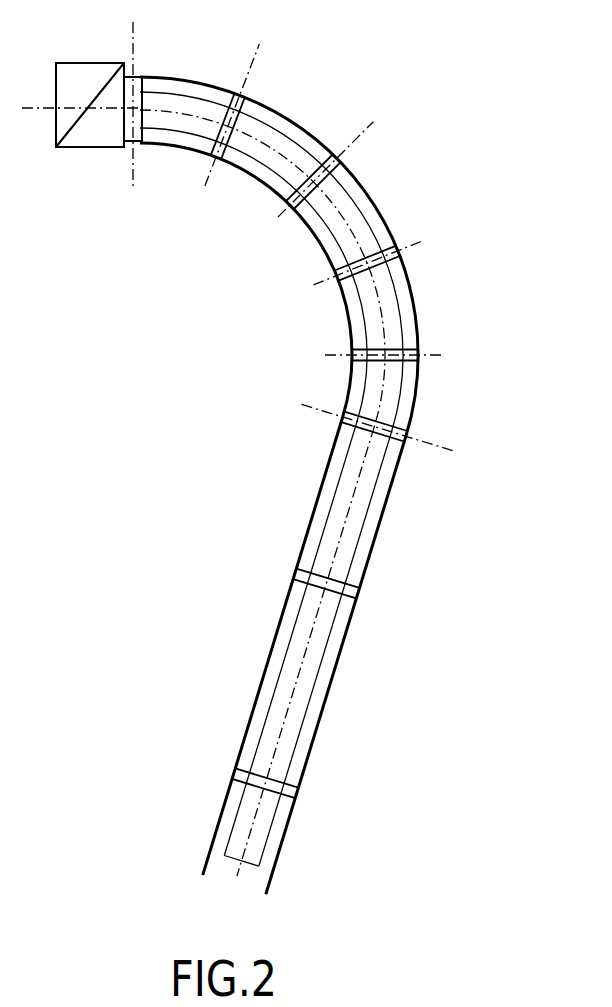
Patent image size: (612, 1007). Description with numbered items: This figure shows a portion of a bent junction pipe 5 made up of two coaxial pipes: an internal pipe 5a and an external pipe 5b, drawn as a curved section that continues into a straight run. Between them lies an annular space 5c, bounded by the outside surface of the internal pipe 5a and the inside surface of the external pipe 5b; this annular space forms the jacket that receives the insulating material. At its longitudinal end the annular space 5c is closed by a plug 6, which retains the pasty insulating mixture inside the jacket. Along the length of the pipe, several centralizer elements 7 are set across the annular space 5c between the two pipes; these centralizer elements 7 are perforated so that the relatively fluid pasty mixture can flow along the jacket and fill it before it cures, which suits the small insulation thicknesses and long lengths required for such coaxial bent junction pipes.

The bent junction pipe 5 is at (331, 469).
The internal pipe 5a is at (381, 477).
The external pipe 5b is at (386, 510).
The annular space 5c is at (409, 401).
The plug 6 is at (138, 86).
The centralizer element 7 is at (330, 181).